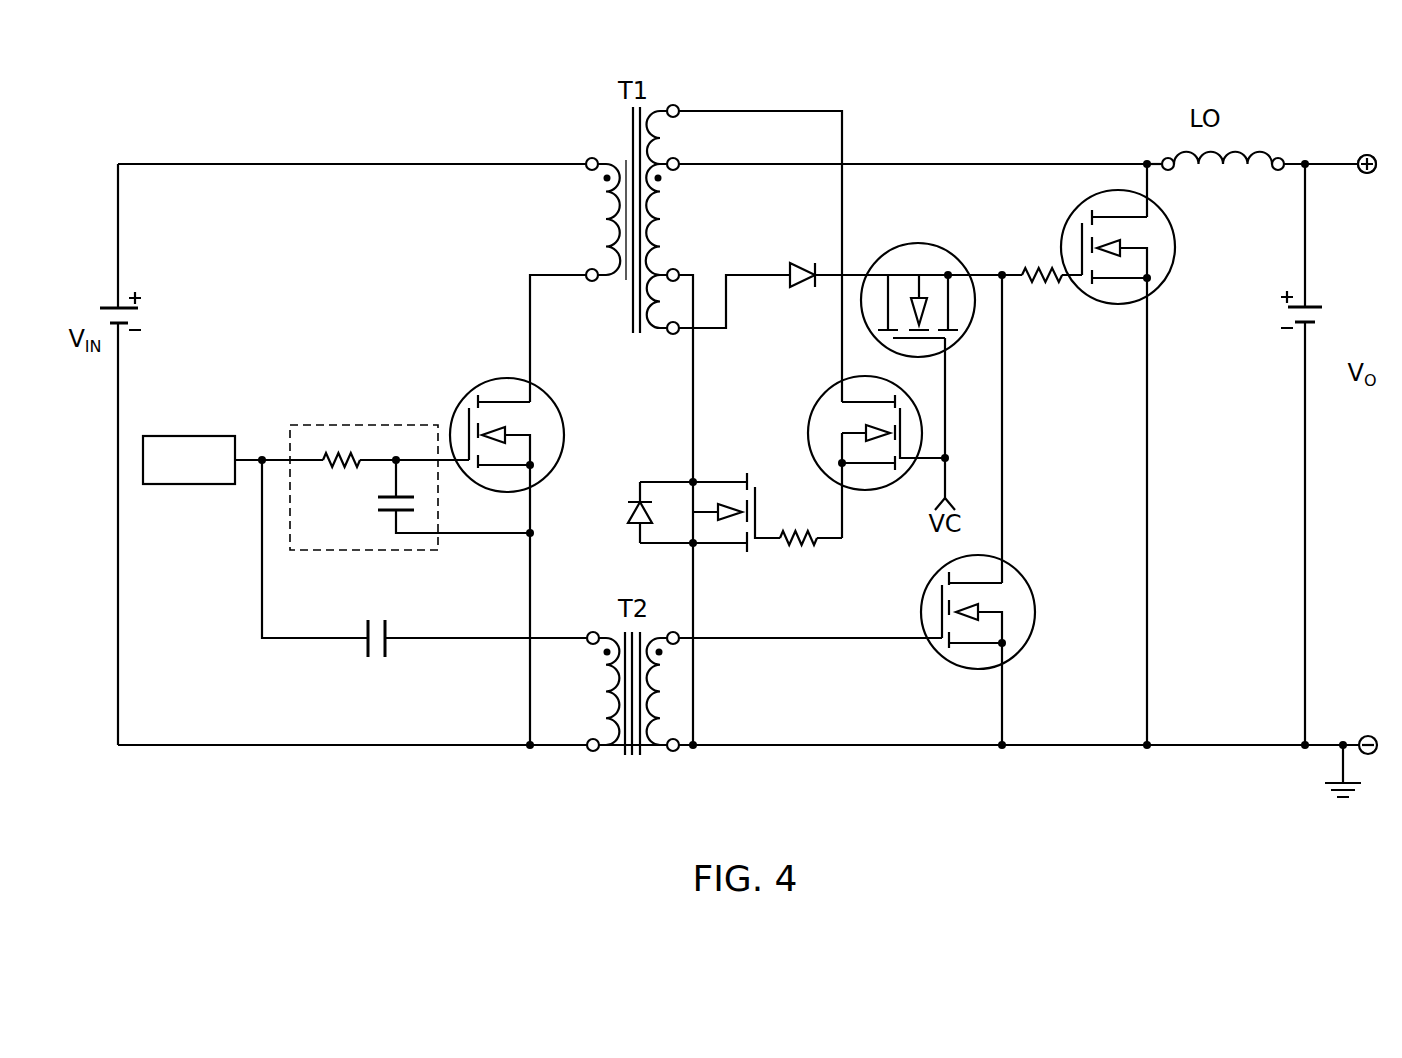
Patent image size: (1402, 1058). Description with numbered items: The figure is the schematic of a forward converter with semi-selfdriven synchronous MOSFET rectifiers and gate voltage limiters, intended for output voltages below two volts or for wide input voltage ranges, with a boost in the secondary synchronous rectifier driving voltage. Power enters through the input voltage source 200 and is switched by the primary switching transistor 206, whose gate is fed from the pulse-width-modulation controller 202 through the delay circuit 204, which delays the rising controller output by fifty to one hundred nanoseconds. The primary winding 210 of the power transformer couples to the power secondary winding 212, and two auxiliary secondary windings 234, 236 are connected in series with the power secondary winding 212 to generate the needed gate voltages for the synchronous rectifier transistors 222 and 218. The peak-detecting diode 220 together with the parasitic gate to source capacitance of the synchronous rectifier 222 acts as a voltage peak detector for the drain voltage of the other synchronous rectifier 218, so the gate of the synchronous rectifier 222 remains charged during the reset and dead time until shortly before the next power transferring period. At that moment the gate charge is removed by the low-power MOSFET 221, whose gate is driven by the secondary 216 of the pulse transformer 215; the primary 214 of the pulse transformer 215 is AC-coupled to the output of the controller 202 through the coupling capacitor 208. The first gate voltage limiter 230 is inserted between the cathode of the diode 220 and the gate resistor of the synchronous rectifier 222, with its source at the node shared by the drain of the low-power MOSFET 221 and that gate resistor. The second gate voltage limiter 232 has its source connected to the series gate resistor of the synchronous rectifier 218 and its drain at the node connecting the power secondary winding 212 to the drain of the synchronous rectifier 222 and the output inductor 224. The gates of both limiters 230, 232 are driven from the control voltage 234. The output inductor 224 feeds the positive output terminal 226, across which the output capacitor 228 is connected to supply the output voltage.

The input voltage source VIN 200 is at (150, 307).
The PWM 202 is at (207, 487).
The delay circuit 204 is at (357, 418).
The Q1 206 is at (474, 372).
The capacitor C1 208 is at (355, 660).
The primary winding of transformer T1 210 is at (587, 210).
The secondary of the power transformer T1 212 is at (682, 220).
The primary of T2 214 is at (588, 765).
The pulse transformer T2 215 is at (632, 762).
The secondary of the pulse transformer 216 is at (677, 765).
The Q2 218 is at (630, 540).
The diode D1 220 is at (784, 262).
The Q4 221 is at (940, 672).
The Q3 222 is at (1160, 303).
The inductor LO 224 is at (1157, 152).
The positive output terminal 226 is at (1357, 152).
The output capacitor CO 228 is at (1318, 300).
The Q5 230 is at (955, 242).
The Q6 232 is at (830, 378).
The control voltage VC 234 is at (690, 150).
The auxiliary secondary winding 236 is at (680, 308).